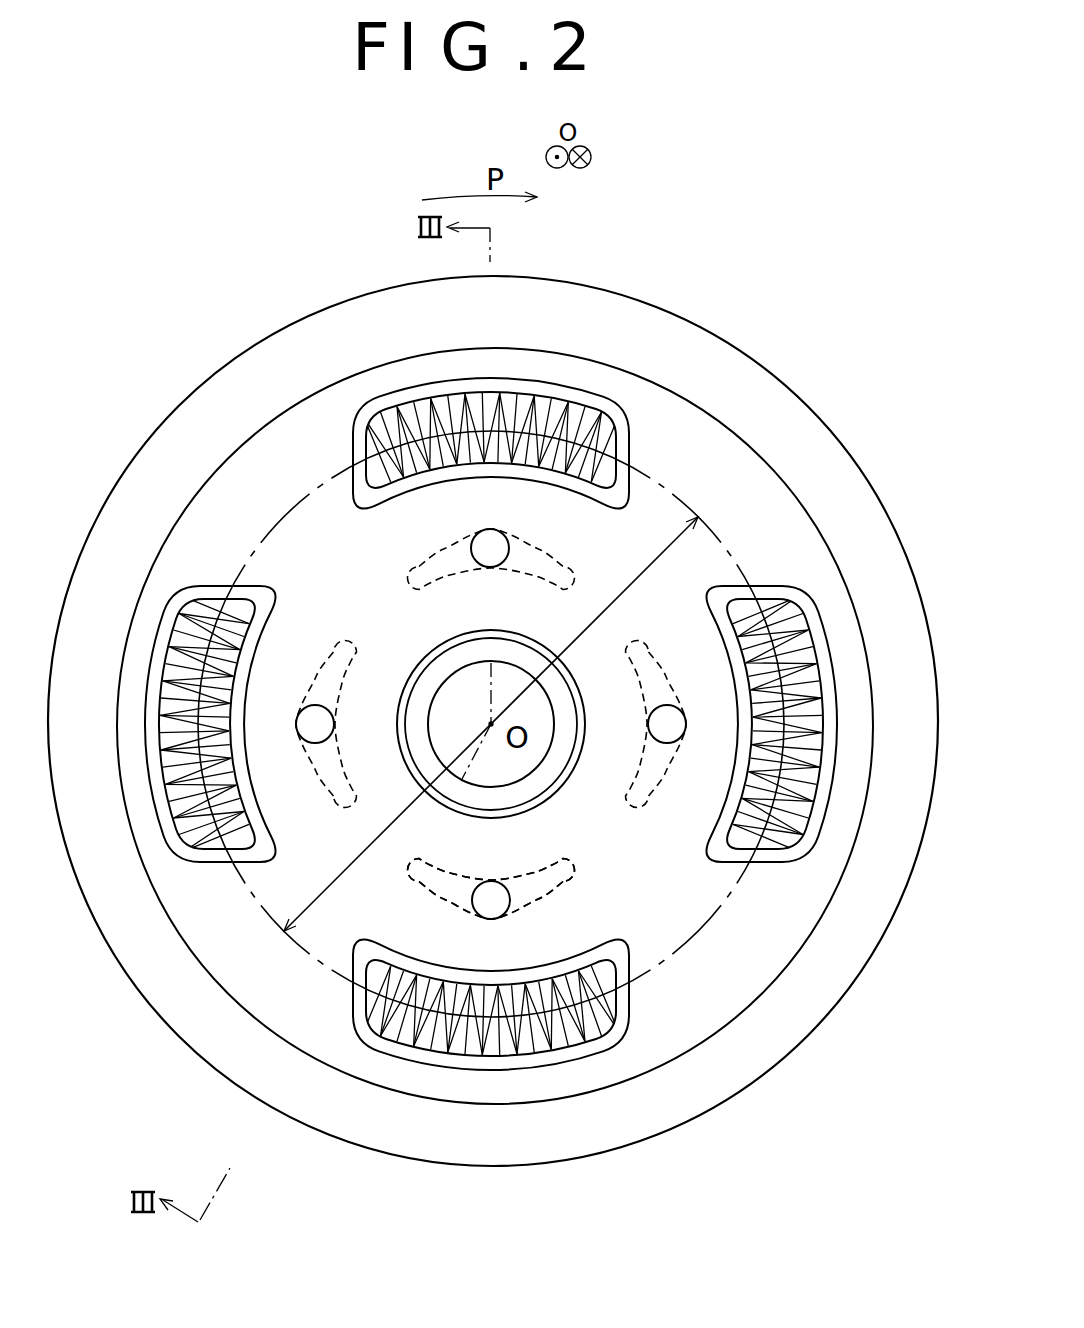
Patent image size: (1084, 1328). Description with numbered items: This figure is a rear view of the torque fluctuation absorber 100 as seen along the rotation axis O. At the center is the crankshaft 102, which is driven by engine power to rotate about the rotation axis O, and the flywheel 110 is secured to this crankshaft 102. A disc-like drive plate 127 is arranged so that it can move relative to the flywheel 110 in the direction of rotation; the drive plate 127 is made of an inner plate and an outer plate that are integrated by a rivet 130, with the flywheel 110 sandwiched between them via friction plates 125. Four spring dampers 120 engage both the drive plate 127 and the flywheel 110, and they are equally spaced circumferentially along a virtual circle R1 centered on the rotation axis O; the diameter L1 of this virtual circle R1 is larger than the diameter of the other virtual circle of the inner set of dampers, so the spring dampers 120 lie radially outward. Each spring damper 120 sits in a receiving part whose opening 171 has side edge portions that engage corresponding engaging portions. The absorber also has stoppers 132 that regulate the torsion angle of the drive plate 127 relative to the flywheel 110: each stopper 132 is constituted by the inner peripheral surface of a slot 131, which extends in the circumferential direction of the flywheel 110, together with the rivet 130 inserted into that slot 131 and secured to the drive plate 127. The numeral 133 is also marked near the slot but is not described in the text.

The torque fluctuation absorber 100 is at (760, 262).
The crankshaft 102 is at (452, 715).
The flywheel 110 is at (755, 1040).
The spring damper 120 is at (547, 1038).
The friction plate 125 is at (571, 666).
The drive plate 127 is at (688, 998).
The rivet 130 is at (490, 905).
The slot 131 is at (455, 902).
The stopper 132 is at (593, 916).
The slit end portion 133 is at (545, 883).
The opening 171 is at (462, 1044).
The virtual circle R1 is at (282, 968).
The diameter of the virtual circle R1 L1 is at (656, 560).